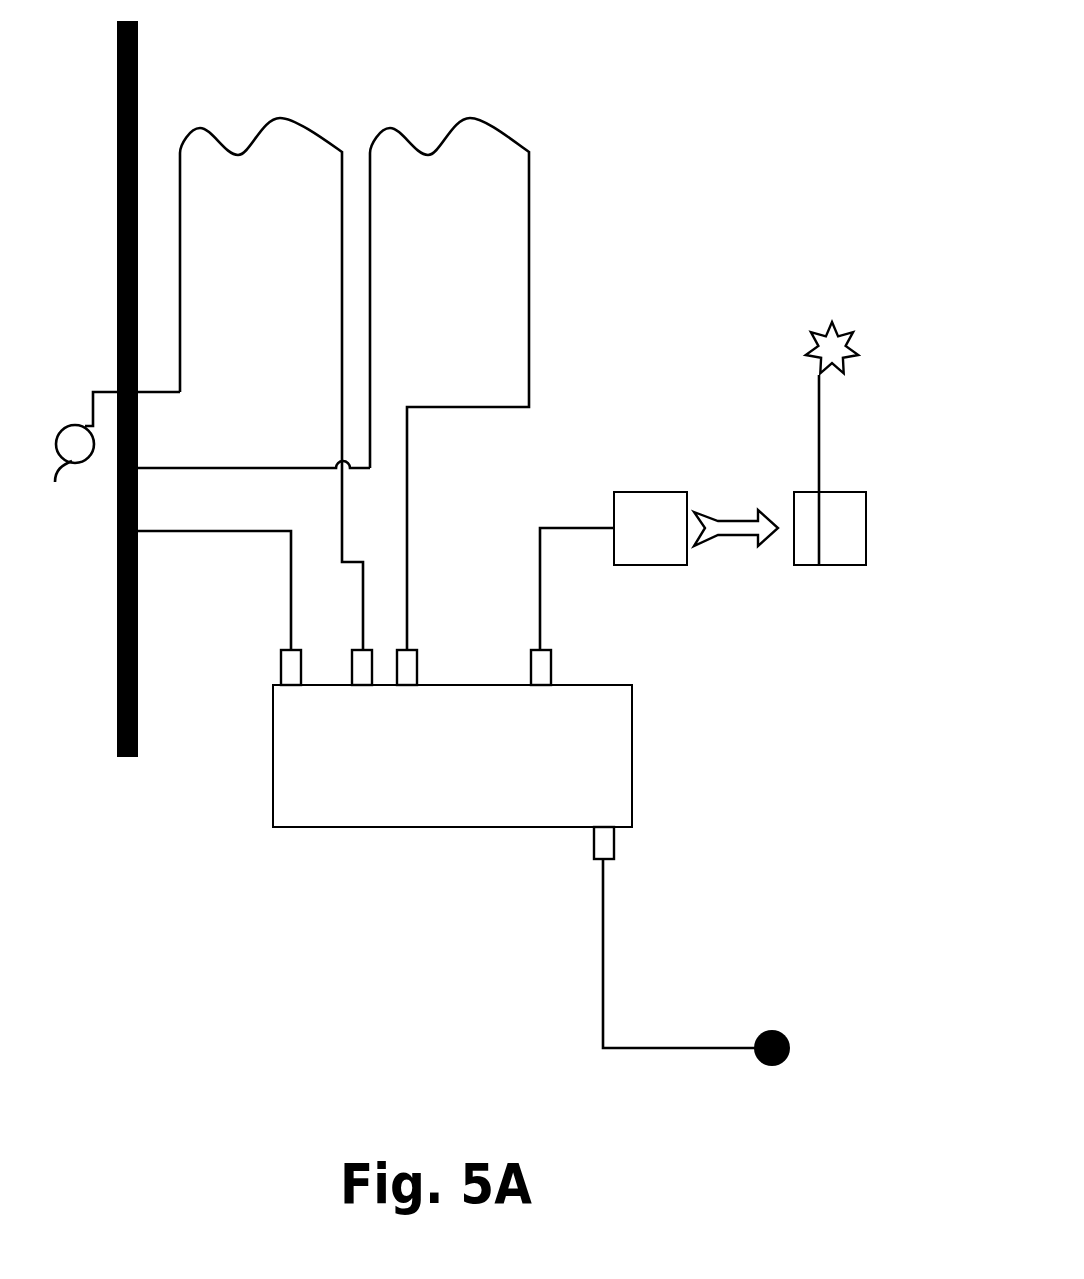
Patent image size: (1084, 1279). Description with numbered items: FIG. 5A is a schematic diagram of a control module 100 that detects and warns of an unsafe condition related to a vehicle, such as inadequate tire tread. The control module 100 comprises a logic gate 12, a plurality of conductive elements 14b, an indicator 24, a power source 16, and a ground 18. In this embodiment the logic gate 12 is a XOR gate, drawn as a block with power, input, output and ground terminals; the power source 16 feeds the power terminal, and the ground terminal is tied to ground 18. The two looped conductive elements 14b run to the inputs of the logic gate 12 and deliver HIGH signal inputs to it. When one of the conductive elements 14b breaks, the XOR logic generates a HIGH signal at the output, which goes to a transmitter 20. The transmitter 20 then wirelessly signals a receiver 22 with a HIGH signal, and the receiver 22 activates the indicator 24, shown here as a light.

The control module 100 is at (764, 58).
The conductive elements 14b is at (180, 258).
The power source 16 is at (111, 425).
The logic gate 12 is at (632, 752).
The ground 18 is at (603, 943).
The transmitter 20 is at (648, 492).
The receiver 22 is at (866, 528).
The indicator 24 is at (855, 330).